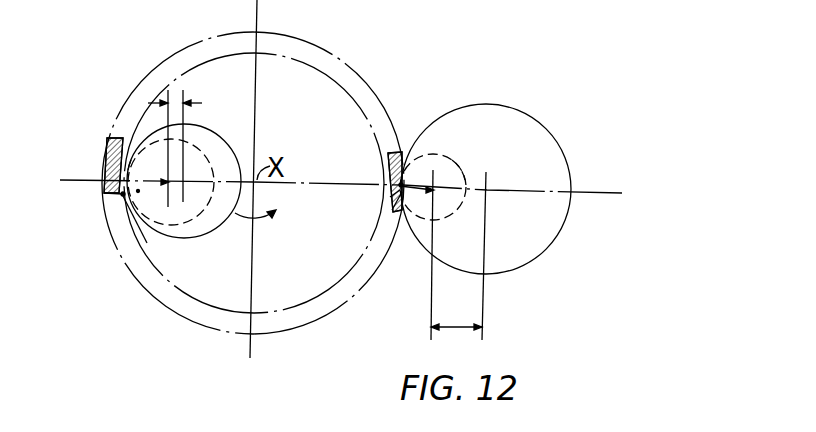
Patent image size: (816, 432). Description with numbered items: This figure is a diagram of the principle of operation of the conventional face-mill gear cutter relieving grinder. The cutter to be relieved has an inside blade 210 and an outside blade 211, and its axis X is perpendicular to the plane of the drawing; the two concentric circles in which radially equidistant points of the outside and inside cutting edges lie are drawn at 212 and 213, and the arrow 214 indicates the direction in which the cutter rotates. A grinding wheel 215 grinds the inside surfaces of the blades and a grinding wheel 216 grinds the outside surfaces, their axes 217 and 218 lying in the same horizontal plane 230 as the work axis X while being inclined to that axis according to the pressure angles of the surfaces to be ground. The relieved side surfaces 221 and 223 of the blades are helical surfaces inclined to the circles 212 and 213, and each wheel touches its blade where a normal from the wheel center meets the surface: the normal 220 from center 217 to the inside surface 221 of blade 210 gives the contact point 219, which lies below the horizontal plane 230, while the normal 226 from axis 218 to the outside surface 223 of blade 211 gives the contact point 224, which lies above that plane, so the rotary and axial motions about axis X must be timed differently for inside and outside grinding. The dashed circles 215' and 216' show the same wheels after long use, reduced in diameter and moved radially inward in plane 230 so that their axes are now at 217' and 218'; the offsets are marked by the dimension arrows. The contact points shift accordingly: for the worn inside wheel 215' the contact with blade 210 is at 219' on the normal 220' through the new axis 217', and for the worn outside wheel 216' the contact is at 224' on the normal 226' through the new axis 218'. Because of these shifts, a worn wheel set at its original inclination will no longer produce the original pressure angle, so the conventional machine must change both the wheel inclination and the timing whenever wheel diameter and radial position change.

The inside blade 210 is at (105, 165).
The outside blade 211 is at (388, 160).
The circle of outside cutting edges 212 is at (210, 284).
The circle of inside cutting edges 213 is at (240, 335).
The arrow indicating direction of rotation 214 is at (260, 218).
The grinding wheel 215 is at (188, 189).
The worn position of grinding wheel 215' is at (179, 183).
The grinding wheel 216 is at (490, 189).
The worn position of grinding wheel 216' is at (440, 198).
The axis of grinding wheel 217 is at (199, 151).
The new position of wheel axis 217' is at (156, 148).
The axis of grinding wheel 218 is at (480, 253).
The new position of wheel axis 218' is at (425, 255).
The point of contact 219 is at (95, 191).
The shifted point of contact 219' is at (91, 204).
The contact point 220 is at (159, 204).
The normal 220' is at (153, 228).
The inside surface 221 is at (133, 158).
The outside surface 223 is at (401, 152).
The point of contact 224 is at (421, 172).
The shifted point of contact 224' is at (371, 205).
The roller surface 226 is at (476, 160).
The normal 226' is at (368, 224).
The horizontal plane 230 is at (317, 187).